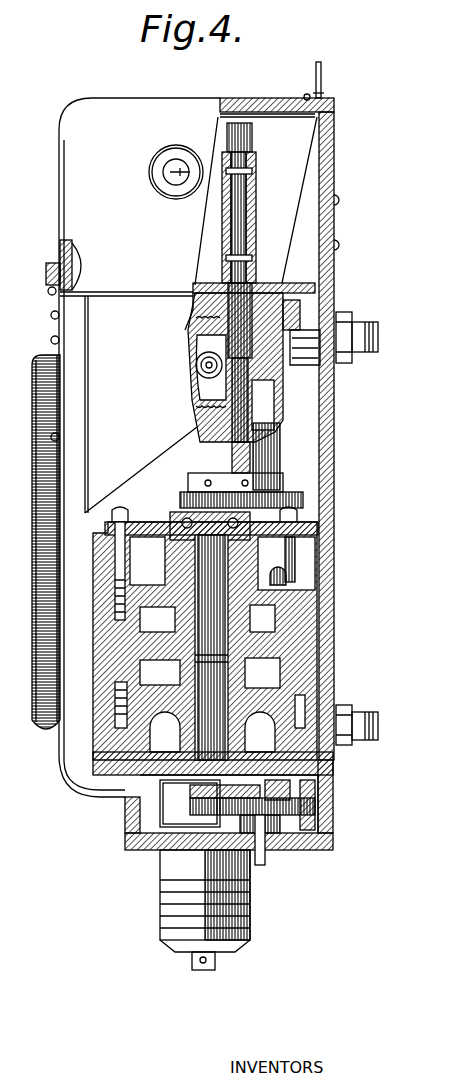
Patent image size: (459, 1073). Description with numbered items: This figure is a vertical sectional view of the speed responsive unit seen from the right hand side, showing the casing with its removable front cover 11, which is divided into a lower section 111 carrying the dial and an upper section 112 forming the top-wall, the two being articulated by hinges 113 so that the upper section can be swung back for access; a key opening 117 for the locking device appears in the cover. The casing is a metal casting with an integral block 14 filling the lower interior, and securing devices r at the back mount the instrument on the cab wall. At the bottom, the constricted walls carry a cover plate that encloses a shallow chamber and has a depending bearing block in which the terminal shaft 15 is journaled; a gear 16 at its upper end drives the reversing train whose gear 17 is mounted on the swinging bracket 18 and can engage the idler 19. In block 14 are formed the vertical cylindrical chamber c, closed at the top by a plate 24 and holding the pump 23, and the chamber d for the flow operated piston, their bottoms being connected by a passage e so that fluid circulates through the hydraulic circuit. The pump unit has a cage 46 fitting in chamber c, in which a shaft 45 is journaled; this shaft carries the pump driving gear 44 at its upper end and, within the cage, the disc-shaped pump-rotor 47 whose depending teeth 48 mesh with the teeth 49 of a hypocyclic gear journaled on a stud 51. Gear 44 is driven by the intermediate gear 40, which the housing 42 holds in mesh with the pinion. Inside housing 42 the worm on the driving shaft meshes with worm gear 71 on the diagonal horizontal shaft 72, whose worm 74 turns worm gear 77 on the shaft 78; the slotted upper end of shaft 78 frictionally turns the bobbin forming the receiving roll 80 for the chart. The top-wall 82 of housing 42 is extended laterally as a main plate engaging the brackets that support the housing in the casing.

The removable front cover 11 is at (68, 735).
The upper cover section 112 is at (68, 160).
The lower cover section 111 is at (72, 326).
The hinges 113 is at (50, 290).
The key opening 117 is at (188, 150).
The receiving roll 80 is at (283, 147).
The top-wall of housing 82 is at (193, 283).
The shaft 78 is at (245, 318).
The worm gear 71 is at (188, 320).
The worm 74 is at (197, 385).
The horizontal shaft 72 is at (196, 366).
The worm gear 77 is at (258, 363).
The housing 42 is at (285, 407).
The pump driving gear 44 is at (180, 492).
The pump 23 is at (153, 491).
The intermediate gear 40 is at (292, 492).
The plate 24 is at (313, 530).
The cage 46 is at (302, 600).
The cylindrical chamber c is at (318, 576).
The shaft 45 is at (205, 548).
The pump-rotor 47 is at (280, 640).
The depending teeth 48 is at (275, 666).
The teeth of hypocyclic gear 49 is at (258, 680).
The block 14 is at (60, 650).
The securing devices r is at (360, 718).
The passage e is at (110, 780).
The stud 51 is at (115, 790).
The idler 19 is at (312, 808).
The cylindrical chamber d is at (150, 812).
The gear 16 is at (193, 815).
The bracket 18 is at (200, 823).
The gear 17 is at (252, 862).
The terminal shaft 15 is at (208, 970).